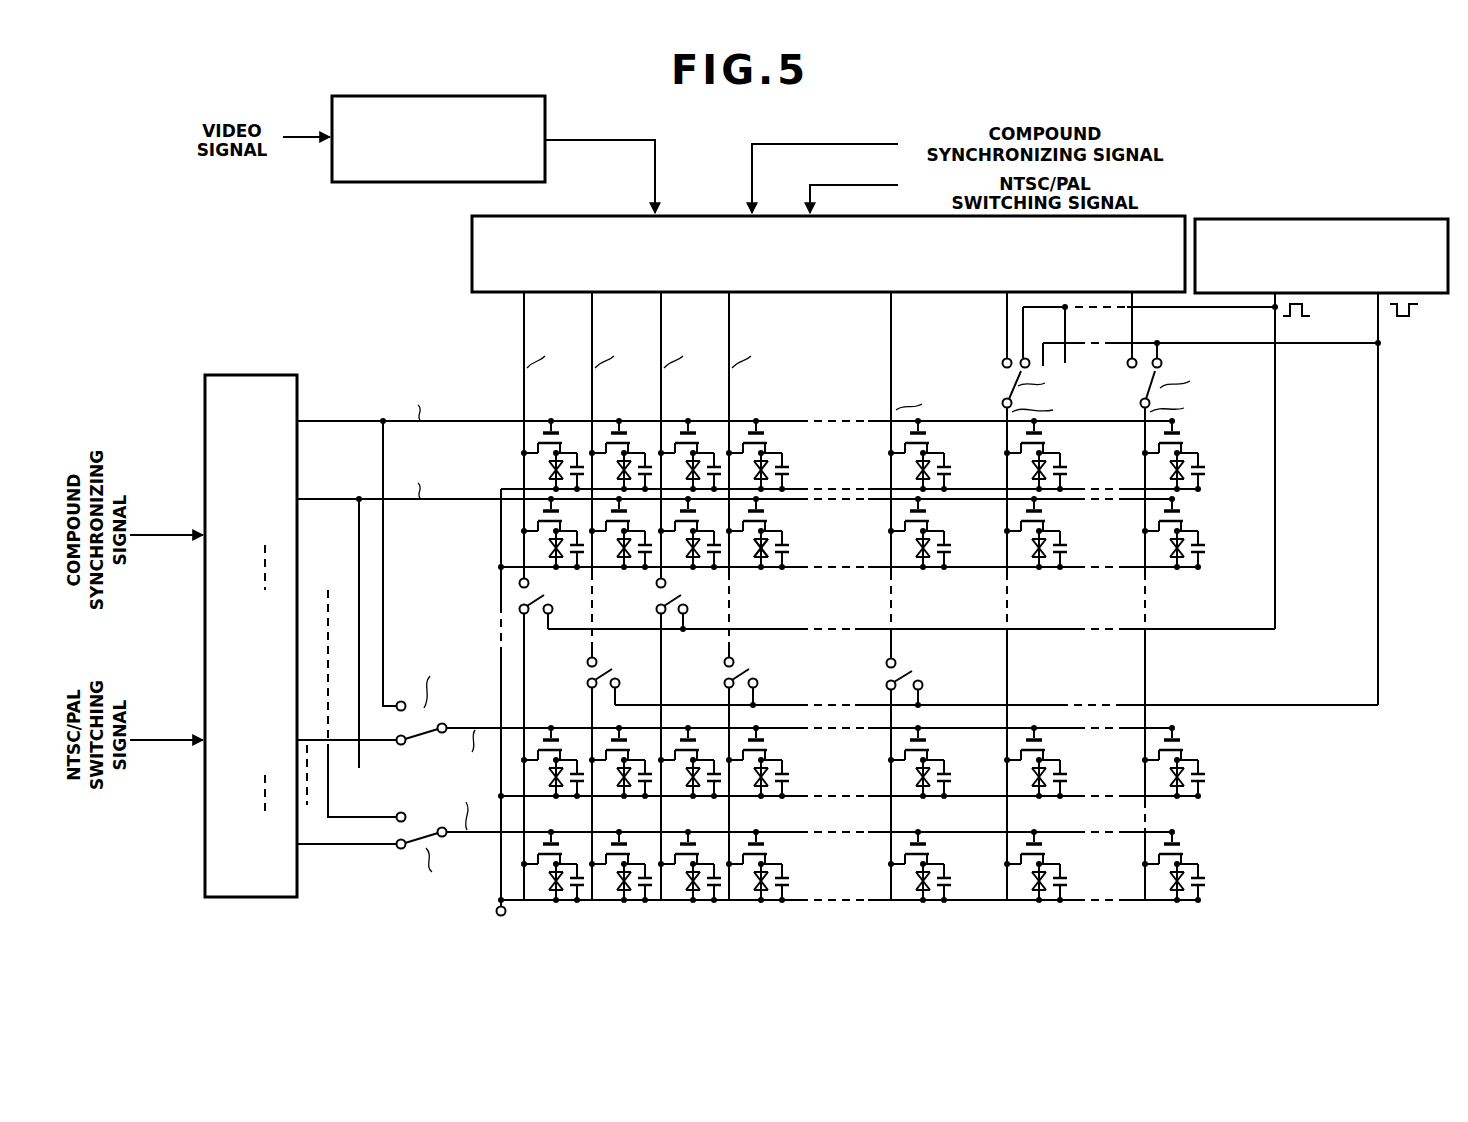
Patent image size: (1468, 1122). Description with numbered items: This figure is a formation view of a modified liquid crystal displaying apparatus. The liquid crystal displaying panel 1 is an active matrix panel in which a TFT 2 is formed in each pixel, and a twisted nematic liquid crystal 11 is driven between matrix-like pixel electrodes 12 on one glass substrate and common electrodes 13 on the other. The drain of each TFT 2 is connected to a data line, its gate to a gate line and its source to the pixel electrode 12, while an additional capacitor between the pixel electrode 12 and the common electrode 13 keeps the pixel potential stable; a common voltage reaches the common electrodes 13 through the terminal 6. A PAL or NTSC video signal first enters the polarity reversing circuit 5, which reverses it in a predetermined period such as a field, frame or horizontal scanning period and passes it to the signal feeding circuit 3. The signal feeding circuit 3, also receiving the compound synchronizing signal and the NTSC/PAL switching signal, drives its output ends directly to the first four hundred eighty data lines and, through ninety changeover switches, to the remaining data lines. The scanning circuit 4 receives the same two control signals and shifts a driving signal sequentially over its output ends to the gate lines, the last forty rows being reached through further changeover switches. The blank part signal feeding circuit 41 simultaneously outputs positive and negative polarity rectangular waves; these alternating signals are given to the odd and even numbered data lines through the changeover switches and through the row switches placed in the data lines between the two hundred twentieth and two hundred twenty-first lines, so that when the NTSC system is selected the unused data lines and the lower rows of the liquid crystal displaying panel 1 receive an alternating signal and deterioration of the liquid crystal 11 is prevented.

The liquid crystal displaying panel 1 is at (300, 298).
The TFT 2 is at (533, 435).
The signal feeding circuit 3 is at (472, 228).
The scanning circuit 4 is at (205, 397).
The polarity reversing circuit 5 is at (546, 112).
The terminal 6 is at (496, 911).
The liquid crystal 11 is at (758, 548).
The pixel electrode 12 is at (765, 452).
The common electrode 13 is at (765, 512).
The blank part signal feeding circuit 41 is at (1350, 219).